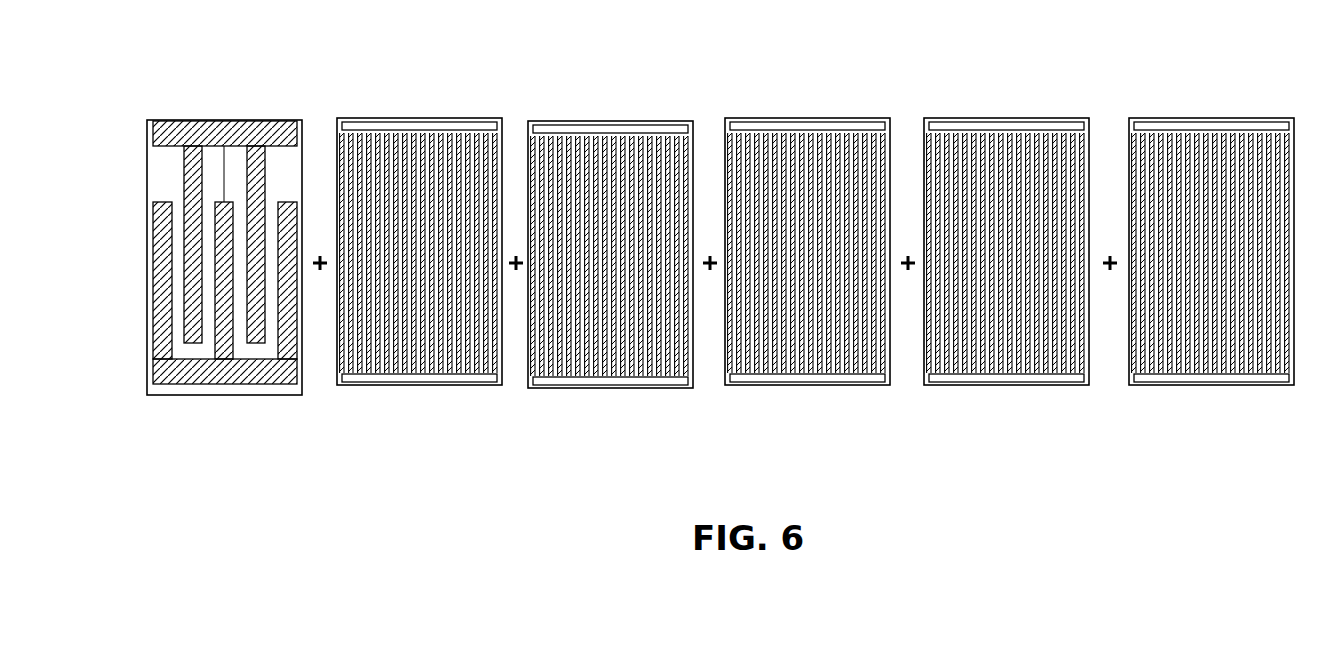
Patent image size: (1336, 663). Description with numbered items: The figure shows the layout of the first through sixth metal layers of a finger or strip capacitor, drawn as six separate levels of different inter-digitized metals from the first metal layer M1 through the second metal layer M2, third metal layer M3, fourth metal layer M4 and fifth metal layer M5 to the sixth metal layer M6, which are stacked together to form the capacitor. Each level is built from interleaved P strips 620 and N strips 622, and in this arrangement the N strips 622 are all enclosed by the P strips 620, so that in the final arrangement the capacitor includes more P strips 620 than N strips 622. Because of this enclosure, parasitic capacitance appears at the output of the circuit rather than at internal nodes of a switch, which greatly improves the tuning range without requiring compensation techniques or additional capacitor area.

The P strips 620 is at (258, 120).
The N strips 622 is at (292, 395).
The first metal layer M1 is at (1211, 277).
The second metal layer M2 is at (1006, 277).
The third metal layer M3 is at (807, 277).
The fourth metal layer M4 is at (610, 279).
The fifth metal layer M5 is at (419, 277).
The sixth metal layer M6 is at (224, 273).